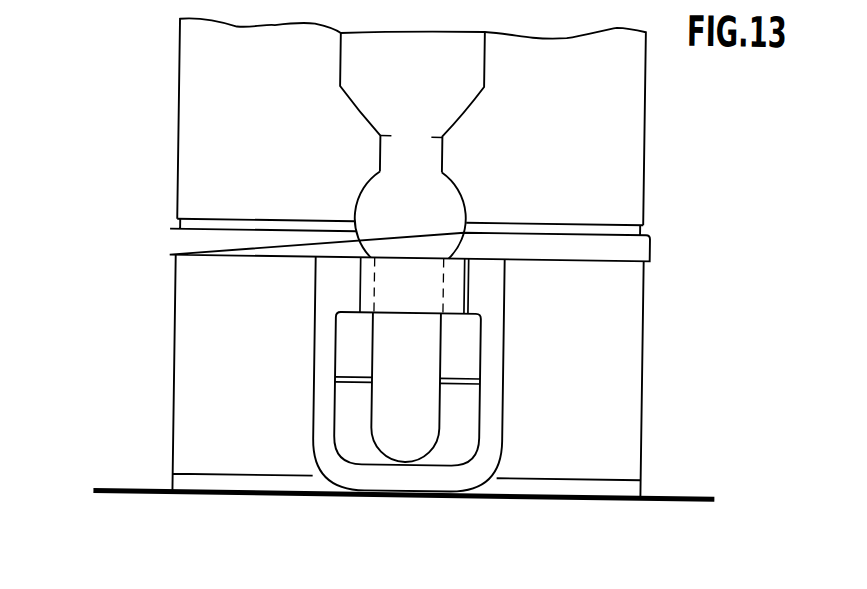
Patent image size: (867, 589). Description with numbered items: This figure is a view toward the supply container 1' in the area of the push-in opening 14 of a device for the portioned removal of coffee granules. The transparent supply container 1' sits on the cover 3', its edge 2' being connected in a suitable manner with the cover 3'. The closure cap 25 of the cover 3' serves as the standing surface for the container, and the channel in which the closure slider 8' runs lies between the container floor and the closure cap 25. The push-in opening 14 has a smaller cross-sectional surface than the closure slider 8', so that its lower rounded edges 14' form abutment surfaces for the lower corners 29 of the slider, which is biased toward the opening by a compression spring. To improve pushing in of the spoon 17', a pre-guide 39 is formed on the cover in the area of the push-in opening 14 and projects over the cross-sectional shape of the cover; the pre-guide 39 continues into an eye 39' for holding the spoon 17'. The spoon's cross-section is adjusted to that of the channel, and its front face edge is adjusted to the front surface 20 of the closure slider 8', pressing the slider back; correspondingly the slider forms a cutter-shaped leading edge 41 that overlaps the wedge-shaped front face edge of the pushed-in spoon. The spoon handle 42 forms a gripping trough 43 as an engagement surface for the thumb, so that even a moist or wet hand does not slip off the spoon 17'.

The supply container 1' is at (466, 122).
The edge 2' is at (463, 203).
The cover 3' is at (368, 374).
The spoon 17' is at (286, 142).
The gripping trough 43 is at (384, 203).
The eye 39' is at (561, 287).
The pre-guide 39 is at (294, 373).
The push-in opening 14 is at (543, 391).
The lower rounded edges 14' is at (401, 514).
The front surface 20 is at (449, 447).
The spoon handle 42 is at (430, 352).
The cutter-shaped leading edge 41 is at (345, 379).
The closure slider 8' is at (347, 510).
The lower corners 29 is at (336, 458).
The closure cap 25 is at (591, 486).